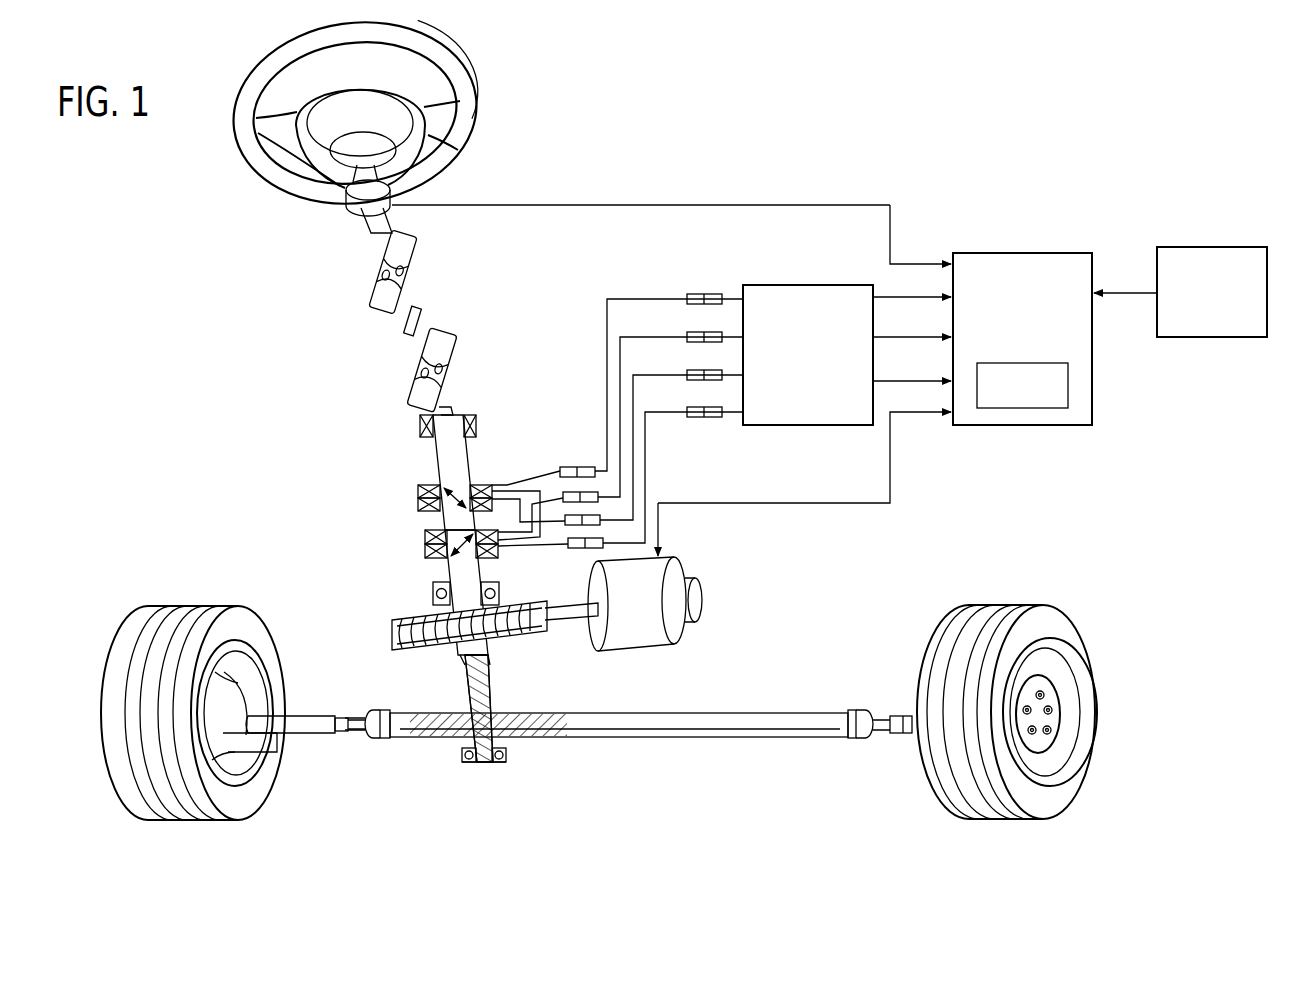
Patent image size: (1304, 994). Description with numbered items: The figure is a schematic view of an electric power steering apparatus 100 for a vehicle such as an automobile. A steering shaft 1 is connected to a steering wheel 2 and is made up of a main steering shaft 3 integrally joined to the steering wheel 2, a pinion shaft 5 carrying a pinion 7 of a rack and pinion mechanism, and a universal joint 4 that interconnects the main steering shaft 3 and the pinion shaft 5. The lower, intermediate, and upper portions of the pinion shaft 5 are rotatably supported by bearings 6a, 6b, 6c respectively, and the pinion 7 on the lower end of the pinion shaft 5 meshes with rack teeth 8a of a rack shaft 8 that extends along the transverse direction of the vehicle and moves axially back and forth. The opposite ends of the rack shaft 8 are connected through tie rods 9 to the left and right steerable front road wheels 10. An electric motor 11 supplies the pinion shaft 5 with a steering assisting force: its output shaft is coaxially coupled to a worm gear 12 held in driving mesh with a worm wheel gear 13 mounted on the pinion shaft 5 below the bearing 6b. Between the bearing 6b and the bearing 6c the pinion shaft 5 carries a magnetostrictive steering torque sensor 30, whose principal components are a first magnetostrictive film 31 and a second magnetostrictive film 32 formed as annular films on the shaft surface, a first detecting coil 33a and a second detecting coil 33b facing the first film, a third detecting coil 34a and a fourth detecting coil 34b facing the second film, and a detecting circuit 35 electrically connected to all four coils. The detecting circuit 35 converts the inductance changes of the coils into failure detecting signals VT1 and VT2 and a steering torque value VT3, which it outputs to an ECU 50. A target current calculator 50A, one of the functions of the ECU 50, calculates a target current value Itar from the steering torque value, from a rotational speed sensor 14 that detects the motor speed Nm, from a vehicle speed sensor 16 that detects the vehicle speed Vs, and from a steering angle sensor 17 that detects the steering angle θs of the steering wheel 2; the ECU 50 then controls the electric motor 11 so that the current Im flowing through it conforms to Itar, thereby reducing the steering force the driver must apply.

The steering shaft 1 is at (362, 384).
The steering wheel 2 is at (472, 97).
The main steering shaft 3 is at (370, 226).
The universal joint 4 is at (388, 306).
The pinion shaft 5 is at (463, 656).
The bearing 6a is at (462, 758).
The bearing 6b is at (496, 590).
The bearing 6c is at (420, 428).
The pinion 7 is at (491, 701).
The rack shaft 8 is at (619, 749).
The rack teeth 8a is at (531, 737).
The tie rod 9 is at (309, 734).
The steerable front road wheel 10 is at (237, 628).
The electric motor 11 is at (655, 637).
The worm gear 12 is at (514, 632).
The worm wheel gear 13 is at (392, 641).
The rotational speed sensor 14 is at (701, 592).
The vehicle speed sensor 16 is at (1236, 247).
The steering angle sensor 17 is at (388, 211).
The magnetostrictive steering torque sensor 30 is at (528, 474).
The first magnetostrictive film 31 is at (457, 483).
The second magnetostrictive film 32 is at (463, 562).
The first detecting coil 33a is at (418, 490).
The second detecting coil 33b is at (418, 507).
The third detecting coil 34a is at (425, 538).
The fourth detecting coil 34b is at (425, 554).
The detecting circuit 35 is at (846, 285).
The ECU 50 is at (891, 354).
The target current calculator 50A is at (1000, 409).
The electric power steering apparatus 100 is at (666, 152).